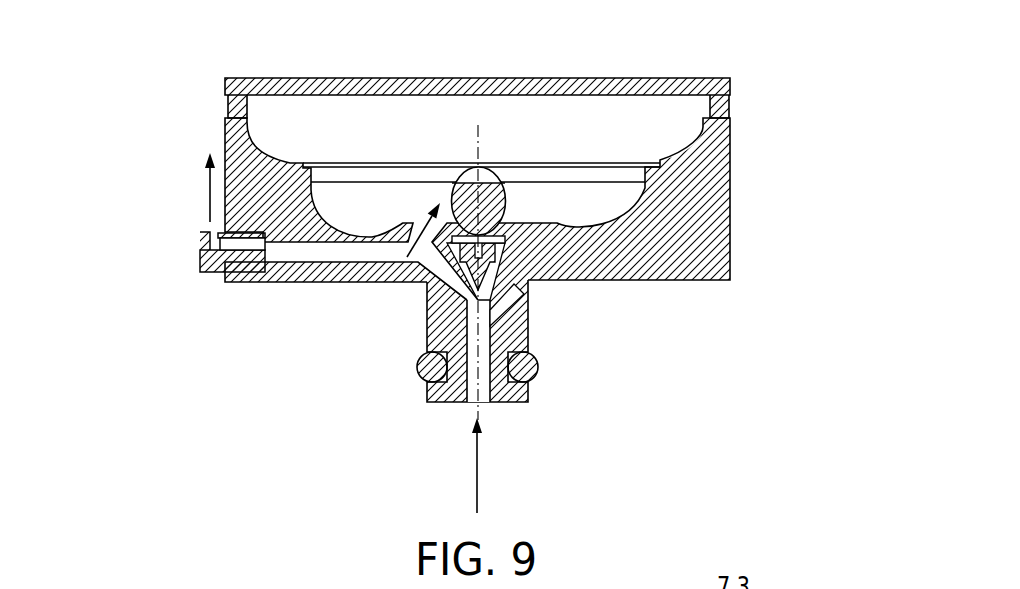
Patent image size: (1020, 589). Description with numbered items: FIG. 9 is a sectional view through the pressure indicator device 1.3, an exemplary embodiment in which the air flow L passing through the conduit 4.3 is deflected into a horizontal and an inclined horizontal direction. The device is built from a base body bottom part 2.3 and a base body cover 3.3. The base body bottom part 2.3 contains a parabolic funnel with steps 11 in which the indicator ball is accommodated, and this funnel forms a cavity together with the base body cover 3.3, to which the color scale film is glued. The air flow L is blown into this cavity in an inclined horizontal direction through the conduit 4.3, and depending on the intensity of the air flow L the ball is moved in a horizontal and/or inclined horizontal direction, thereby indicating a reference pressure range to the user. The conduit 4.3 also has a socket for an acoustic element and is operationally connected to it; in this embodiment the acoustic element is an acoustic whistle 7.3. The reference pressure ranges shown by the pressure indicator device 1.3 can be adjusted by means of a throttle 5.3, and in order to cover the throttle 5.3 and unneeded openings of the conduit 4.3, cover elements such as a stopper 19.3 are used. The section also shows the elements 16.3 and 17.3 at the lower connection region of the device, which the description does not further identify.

The pressure indicator device 1.3 is at (262, 379).
The base body bottom part 2.3 is at (228, 138).
The base body cover 3.3 is at (226, 92).
The conduit 4.3 is at (373, 250).
The throttle 5.3 is at (428, 331).
The acoustic whistle 7.3 is at (205, 275).
The steps 11 is at (563, 223).
The sealing ring 16.3 is at (538, 372).
The connection nipple 17.3 is at (543, 412).
The stopper 19.3 is at (513, 317).
The air flow L is at (210, 188).